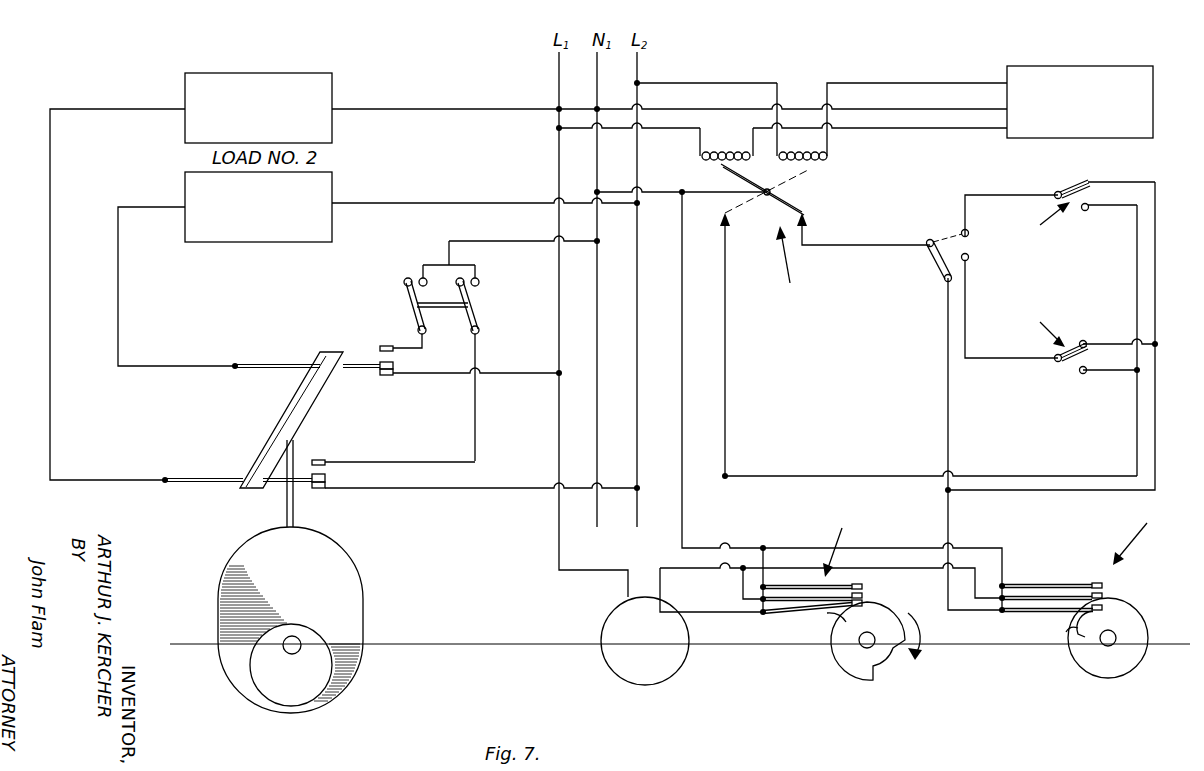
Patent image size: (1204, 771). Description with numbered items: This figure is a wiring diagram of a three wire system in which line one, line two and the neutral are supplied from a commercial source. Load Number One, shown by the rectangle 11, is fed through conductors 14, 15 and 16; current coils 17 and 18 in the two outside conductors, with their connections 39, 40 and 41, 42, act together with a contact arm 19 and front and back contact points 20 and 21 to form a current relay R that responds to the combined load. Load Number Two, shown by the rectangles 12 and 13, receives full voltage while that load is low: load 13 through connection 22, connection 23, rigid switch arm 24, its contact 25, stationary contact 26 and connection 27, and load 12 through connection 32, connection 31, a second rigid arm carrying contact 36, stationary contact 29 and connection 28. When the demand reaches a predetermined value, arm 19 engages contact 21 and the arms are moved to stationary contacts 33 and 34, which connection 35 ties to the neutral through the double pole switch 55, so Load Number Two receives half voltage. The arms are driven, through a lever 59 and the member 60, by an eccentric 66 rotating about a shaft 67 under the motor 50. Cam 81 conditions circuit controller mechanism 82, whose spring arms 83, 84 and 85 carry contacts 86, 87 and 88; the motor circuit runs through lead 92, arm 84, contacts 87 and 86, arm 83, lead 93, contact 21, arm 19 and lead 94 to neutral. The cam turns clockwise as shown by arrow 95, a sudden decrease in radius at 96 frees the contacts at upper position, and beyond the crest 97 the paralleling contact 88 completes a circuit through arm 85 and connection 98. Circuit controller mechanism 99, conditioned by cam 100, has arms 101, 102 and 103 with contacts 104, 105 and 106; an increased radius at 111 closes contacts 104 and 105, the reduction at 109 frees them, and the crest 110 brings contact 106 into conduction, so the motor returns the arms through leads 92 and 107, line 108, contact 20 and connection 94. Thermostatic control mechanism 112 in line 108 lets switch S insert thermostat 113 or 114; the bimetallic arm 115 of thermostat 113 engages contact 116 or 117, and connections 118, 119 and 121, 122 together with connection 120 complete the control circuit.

The rectangle 11 is at (1122, 70).
The rectangle 12 is at (318, 186).
The rectangle 13 is at (318, 88).
The conductor 14 is at (670, 130).
The conductor 15 is at (663, 105).
The conductor 16 is at (688, 83).
The current coil 17 is at (718, 165).
The current coil 18 is at (817, 163).
The contact arm 19 is at (793, 198).
The front contact point 20 is at (808, 217).
The back contact point 21 is at (731, 218).
The connection 22 is at (466, 92).
The connection 23 is at (50, 172).
The rigid switch arm 24 is at (198, 478).
The contact 25 is at (327, 481).
The stationary contact 26 is at (320, 490).
The connection 27 is at (493, 490).
The connection 28 is at (510, 372).
The stationary contact 29 is at (387, 376).
The connection 31 is at (118, 294).
The connection 32 is at (437, 203).
The stationary contact 33 is at (322, 459).
The stationary contact 34 is at (386, 345).
The connection 35 is at (500, 241).
The contact 36 is at (394, 366).
The connection 39 is at (745, 138).
The connection 40 is at (706, 138).
The connection 41 is at (843, 107).
The connection 42 is at (778, 113).
The motor 50 is at (275, 364).
The double pole switch 55 is at (478, 312).
The lever 59 is at (298, 402).
The member 60 is at (348, 587).
The eccentric 66 is at (313, 685).
The shaft 67 is at (288, 638).
The cam 81 is at (850, 668).
The circuit controller mechanism 82 is at (799, 562).
The spring contact arm 83 is at (788, 616).
The spring contact arm 84 is at (777, 605).
The spring contact arm 85 is at (782, 587).
The contact 86 is at (867, 602).
The contact 87 is at (863, 595).
The paralleling contact 88 is at (858, 583).
The lead 92 is at (697, 570).
The lead 93 is at (725, 352).
The lead 94 is at (708, 194).
The arrow 95 is at (930, 636).
The sudden decrease in radius 96 is at (880, 677).
The crest 97 is at (827, 615).
The connection 98 is at (682, 377).
The circuit controller mechanism 99 is at (1138, 533).
The cam 100 is at (1130, 613).
The spring arm 101 is at (1037, 613).
The spring arm 102 is at (1025, 597).
The spring arm 103 is at (1055, 585).
The contact 104 is at (1090, 625).
The contact 105 is at (1102, 597).
The contact 106 is at (1097, 583).
The lead 107 is at (902, 567).
The line 108 is at (867, 245).
The sudden reduction in radius 109 is at (1103, 607).
The crest 110 is at (1143, 663).
The increased radius 111 is at (1073, 632).
The thermostatic control mechanism 112 is at (1061, 317).
The thermostat 113 is at (1036, 219).
The thermostat 114 is at (1049, 331).
The bimetallic arm 115 is at (1068, 190).
The contact 116 is at (1090, 180).
The contact 117 is at (1087, 211).
The connection 118 is at (1155, 408).
The connection 119 is at (1155, 218).
The connection 120 is at (1005, 195).
The connection 121 is at (842, 475).
The connection 122 is at (1137, 300).
The current relay R is at (786, 268).
The switch S is at (940, 237).